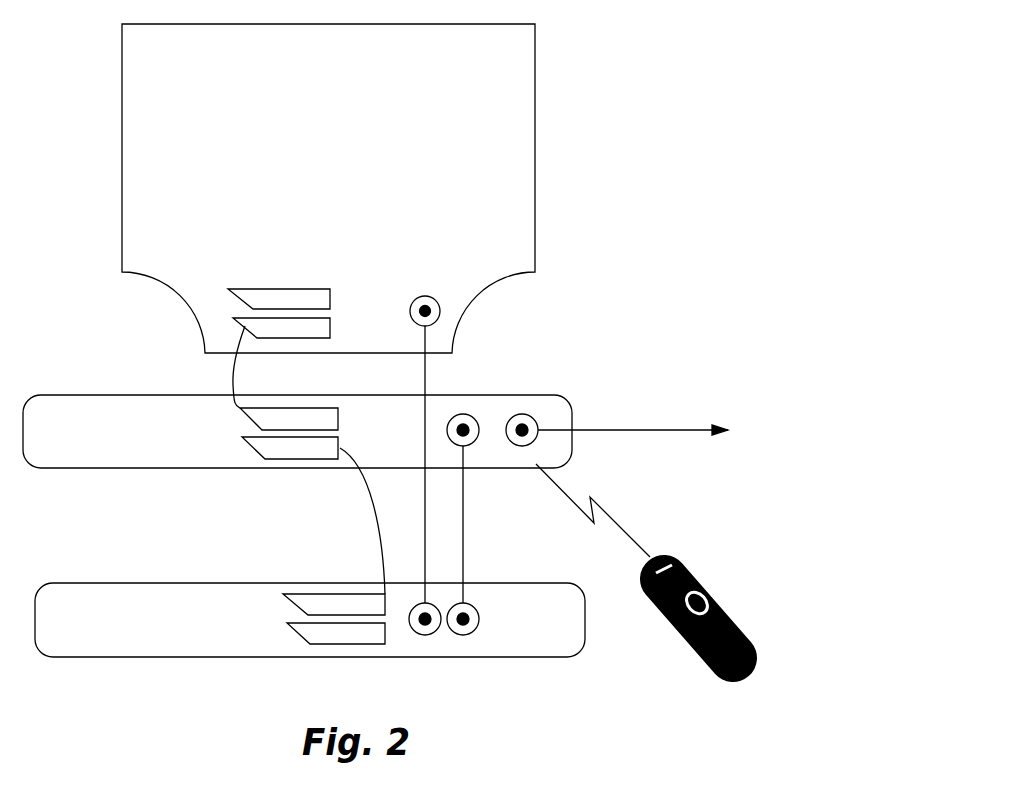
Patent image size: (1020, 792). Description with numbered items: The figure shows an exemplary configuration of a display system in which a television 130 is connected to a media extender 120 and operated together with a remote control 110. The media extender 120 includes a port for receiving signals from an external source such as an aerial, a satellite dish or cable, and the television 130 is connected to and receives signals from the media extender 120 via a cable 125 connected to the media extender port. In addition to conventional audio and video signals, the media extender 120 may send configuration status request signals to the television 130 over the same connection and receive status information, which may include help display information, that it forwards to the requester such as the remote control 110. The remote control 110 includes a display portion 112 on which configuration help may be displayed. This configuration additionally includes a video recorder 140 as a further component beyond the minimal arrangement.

The remote control 110 is at (727, 617).
The remote control display 112 is at (682, 570).
The media extender 120 is at (525, 395).
The cable 125 is at (233, 381).
The television 130 is at (535, 175).
The video recorder 140 is at (62, 583).